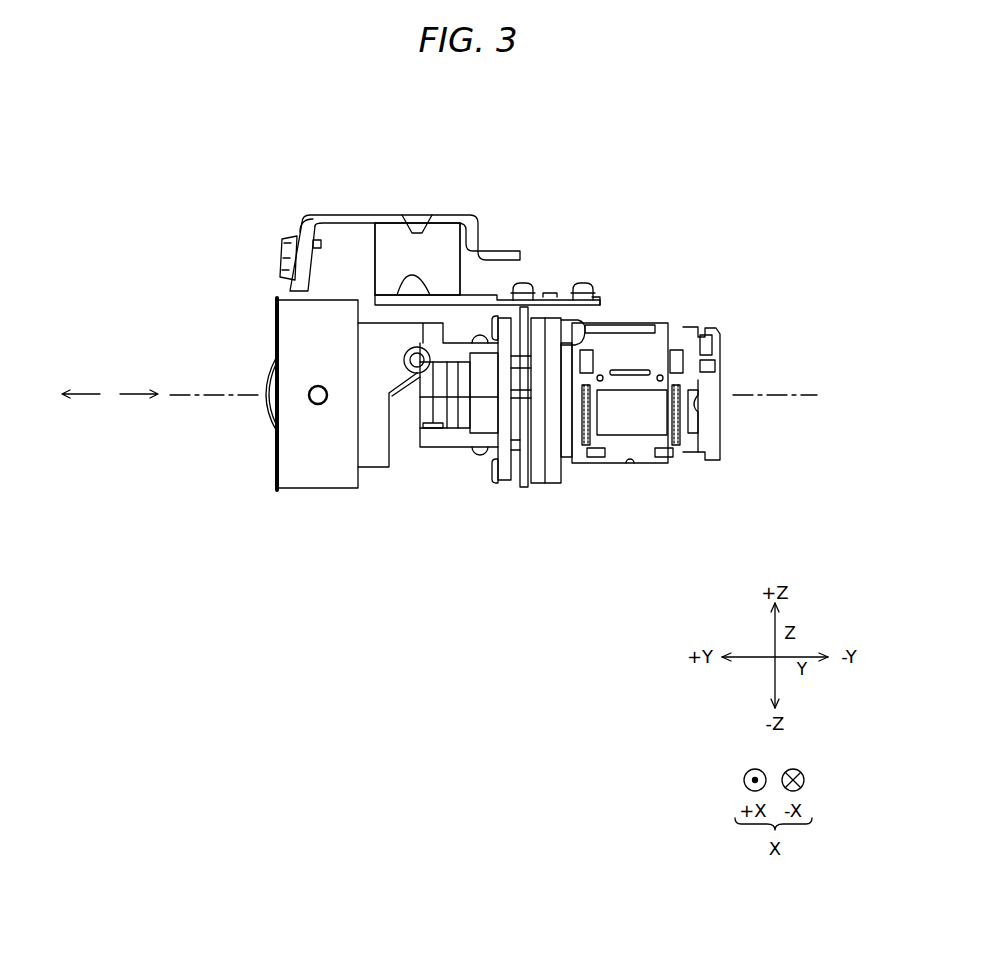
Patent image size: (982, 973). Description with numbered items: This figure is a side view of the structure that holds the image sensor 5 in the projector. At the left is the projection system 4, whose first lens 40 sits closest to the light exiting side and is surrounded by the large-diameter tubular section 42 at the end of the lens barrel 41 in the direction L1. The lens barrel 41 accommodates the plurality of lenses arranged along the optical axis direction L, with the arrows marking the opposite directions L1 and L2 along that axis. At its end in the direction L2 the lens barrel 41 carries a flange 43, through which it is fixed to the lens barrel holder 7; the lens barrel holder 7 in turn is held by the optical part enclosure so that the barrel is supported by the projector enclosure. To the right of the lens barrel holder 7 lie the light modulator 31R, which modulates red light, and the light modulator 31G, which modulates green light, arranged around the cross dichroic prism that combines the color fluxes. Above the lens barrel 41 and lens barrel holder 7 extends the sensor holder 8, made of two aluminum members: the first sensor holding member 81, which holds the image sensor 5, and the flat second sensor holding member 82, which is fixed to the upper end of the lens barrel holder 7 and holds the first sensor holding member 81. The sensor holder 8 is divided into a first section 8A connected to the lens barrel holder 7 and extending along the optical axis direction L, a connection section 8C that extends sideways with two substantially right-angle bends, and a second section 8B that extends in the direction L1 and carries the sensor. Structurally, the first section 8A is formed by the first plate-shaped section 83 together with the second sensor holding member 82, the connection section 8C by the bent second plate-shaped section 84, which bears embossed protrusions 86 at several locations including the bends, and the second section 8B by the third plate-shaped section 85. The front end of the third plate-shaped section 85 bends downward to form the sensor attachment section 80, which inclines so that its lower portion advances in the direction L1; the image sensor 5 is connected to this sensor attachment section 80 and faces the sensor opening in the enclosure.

The projection system 4 is at (342, 514).
The first lens 40 is at (270, 412).
The lens barrel 41 is at (407, 450).
The large-diameter tubular section 42 is at (302, 483).
The flange 43 is at (507, 481).
The image sensor 5 is at (283, 258).
The lens barrel holder 7 is at (532, 485).
The sensor holder 8 is at (240, 120).
The first section 8A is at (503, 303).
The second section 8B is at (302, 217).
The connection section 8C is at (380, 263).
The sensor attachment section 80 is at (310, 272).
The first sensor holding member 81 is at (597, 300).
The second sensor holding member 82 is at (600, 307).
The first plate-shaped section 83 is at (563, 300).
The second plate-shaped section 84 is at (367, 245).
The third plate-shaped section 85 is at (330, 213).
The embossed protrusions 86 is at (418, 277).
The light modulator 31R is at (638, 413).
The light modulator 31G is at (720, 410).
The optical axis direction L is at (203, 397).
The direction L1 is at (81, 384).
The direction L2 is at (139, 384).